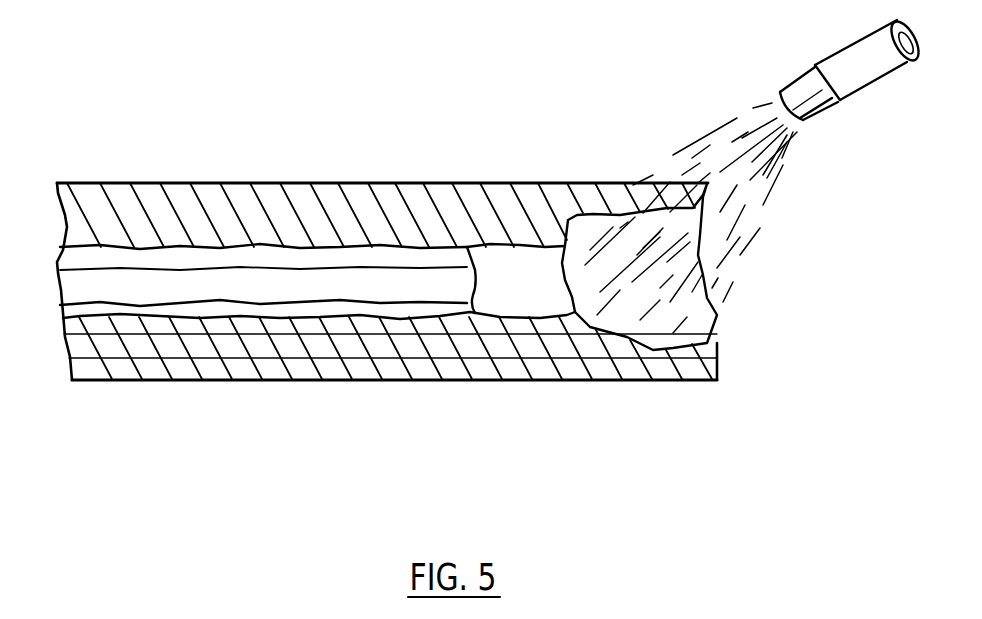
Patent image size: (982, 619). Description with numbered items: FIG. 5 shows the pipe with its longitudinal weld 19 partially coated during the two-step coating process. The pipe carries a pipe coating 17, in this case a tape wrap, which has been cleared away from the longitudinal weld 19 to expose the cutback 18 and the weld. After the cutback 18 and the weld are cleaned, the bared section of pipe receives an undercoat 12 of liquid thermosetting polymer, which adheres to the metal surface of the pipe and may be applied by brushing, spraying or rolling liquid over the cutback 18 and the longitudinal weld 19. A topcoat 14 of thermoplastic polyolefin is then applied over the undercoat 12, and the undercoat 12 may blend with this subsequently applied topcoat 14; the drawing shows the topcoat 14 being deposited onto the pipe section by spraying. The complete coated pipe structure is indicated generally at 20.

The undercoat 12 is at (516, 264).
The topcoat 14 is at (720, 320).
The pipe coating 17 is at (273, 187).
The cutback 18 is at (56, 262).
The longitudinal weld 19 is at (67, 290).
The laminate structure 20 is at (329, 405).